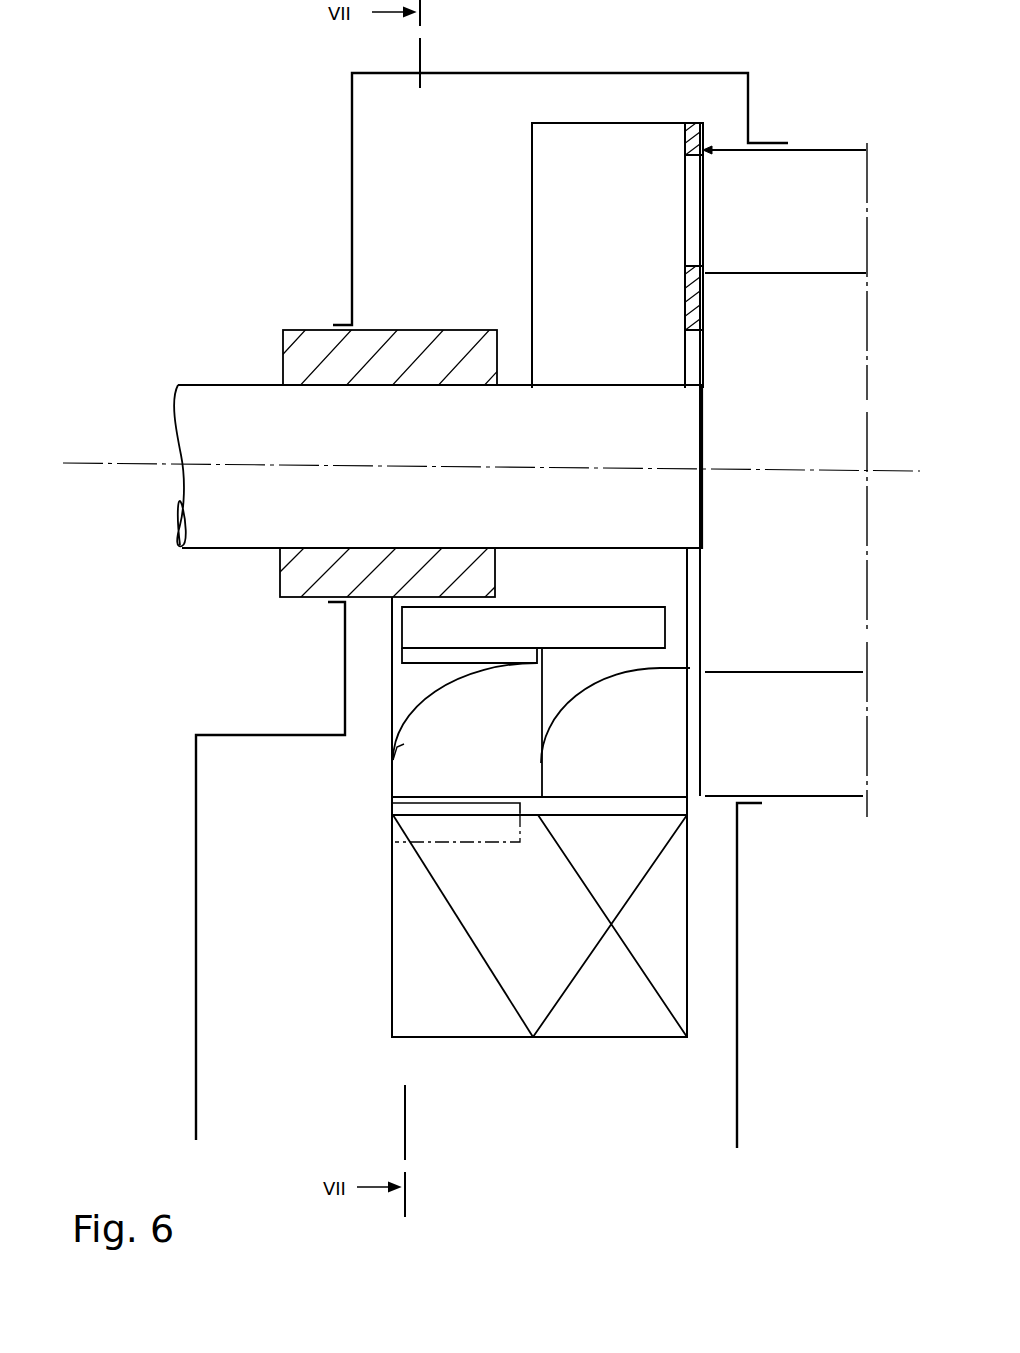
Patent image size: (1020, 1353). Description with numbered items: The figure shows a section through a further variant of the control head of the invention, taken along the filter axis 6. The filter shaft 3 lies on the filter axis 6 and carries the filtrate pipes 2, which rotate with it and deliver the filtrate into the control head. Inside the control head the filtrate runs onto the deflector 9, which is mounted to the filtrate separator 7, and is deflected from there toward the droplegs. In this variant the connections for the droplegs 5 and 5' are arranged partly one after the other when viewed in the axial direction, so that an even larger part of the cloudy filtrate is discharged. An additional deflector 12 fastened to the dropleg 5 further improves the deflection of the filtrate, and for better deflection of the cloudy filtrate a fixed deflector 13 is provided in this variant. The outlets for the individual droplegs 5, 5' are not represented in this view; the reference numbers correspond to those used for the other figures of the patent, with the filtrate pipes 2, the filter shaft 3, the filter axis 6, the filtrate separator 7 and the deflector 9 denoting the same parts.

The filtrate pipe 2 is at (843, 175).
The filter shaft 3 is at (845, 515).
The dropleg 5 is at (629, 926).
The dropleg 5' is at (434, 926).
The filter axis 6 is at (71, 460).
The filtrate separator 7 is at (645, 722).
The deflector 9 is at (657, 673).
The additional deflector 12 is at (440, 828).
The fixed deflector 13 is at (400, 740).